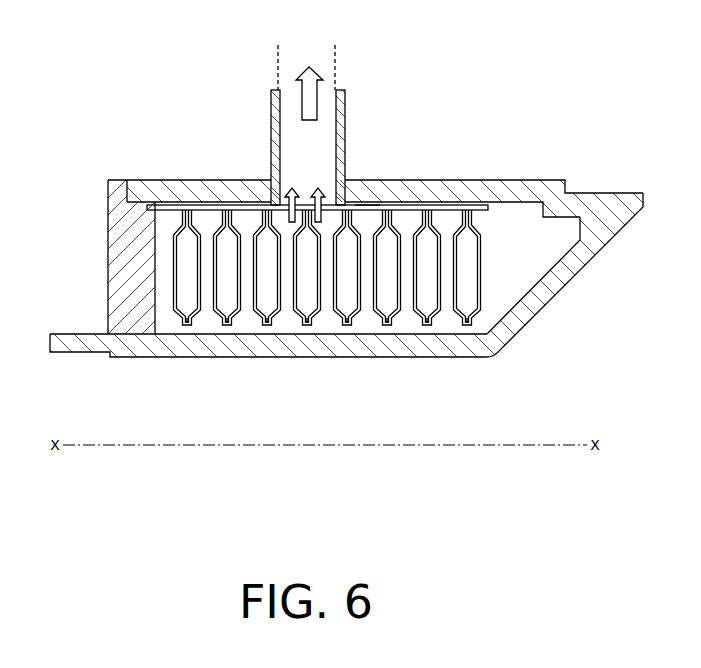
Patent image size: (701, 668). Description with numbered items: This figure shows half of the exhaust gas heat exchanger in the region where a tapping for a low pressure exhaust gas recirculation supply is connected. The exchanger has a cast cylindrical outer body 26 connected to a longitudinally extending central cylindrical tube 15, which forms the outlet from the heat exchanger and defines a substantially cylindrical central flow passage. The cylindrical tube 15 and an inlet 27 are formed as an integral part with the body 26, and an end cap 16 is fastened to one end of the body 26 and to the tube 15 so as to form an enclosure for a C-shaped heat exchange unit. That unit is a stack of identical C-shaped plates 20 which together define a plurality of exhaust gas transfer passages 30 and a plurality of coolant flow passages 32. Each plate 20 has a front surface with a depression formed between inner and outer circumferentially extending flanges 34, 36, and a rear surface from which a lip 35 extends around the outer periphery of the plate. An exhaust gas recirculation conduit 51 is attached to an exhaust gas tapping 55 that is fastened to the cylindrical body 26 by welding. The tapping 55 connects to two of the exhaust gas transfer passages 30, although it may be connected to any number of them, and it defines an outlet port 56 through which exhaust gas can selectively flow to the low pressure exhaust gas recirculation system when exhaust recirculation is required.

The central cylindrical tube 15 is at (87, 333).
The end cap 16 is at (108, 198).
The C-shaped plates 20 is at (195, 313).
The cylindrical outer body 26 is at (172, 178).
The inlet 27 is at (575, 277).
The exhaust gas transfer passages 30 is at (249, 316).
The coolant flow passages 32 is at (270, 318).
The inner circumferentially extending flange 34 is at (323, 228).
The lip 35 is at (395, 210).
The outer circumferentially extending flange 36 is at (366, 207).
The exhaust gas recirculation conduit 51 is at (335, 62).
The exhaust gas tapping 55 is at (271, 98).
The outlet port 56 is at (330, 316).